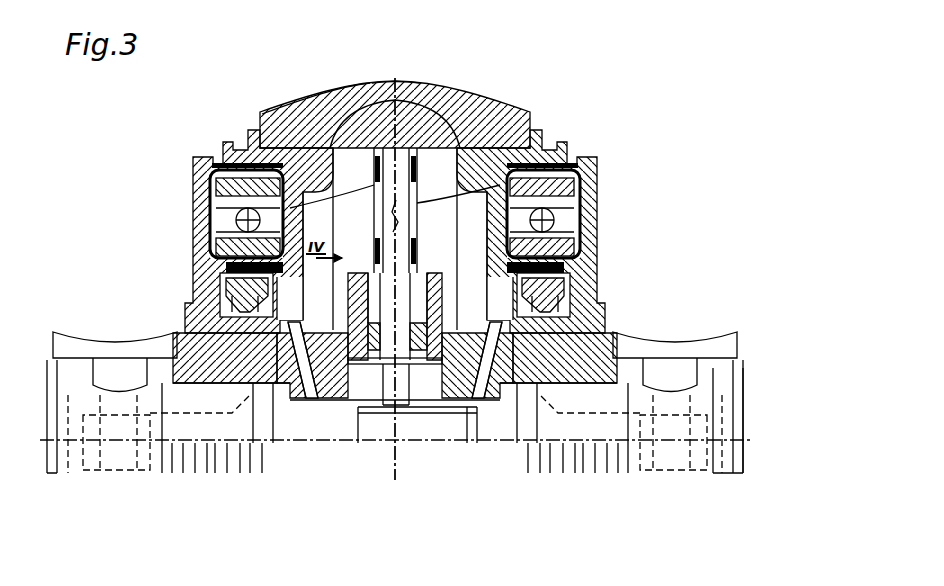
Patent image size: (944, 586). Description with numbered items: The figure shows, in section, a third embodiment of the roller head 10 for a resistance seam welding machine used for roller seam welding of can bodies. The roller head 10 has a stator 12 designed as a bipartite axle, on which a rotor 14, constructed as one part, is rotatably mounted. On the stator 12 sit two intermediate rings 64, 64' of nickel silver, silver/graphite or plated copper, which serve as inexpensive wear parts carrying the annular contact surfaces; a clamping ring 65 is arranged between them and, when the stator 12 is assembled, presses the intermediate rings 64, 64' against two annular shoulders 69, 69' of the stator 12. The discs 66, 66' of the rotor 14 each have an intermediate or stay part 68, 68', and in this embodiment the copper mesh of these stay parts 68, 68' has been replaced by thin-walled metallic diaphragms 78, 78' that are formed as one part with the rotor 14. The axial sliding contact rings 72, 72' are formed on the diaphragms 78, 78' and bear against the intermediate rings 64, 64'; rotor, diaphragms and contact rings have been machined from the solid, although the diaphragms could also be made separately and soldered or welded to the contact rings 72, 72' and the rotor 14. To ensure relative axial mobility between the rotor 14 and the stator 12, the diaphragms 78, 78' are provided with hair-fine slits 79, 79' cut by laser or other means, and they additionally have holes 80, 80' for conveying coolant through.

The roller head 10 is at (556, 104).
The stator 12 is at (615, 333).
The rotor 14 is at (378, 82).
The intermediate ring 64 is at (592, 301).
The intermediate ring 64' is at (197, 301).
The clamping ring 65 is at (410, 400).
The disc 66 is at (449, 239).
The disc 66' is at (352, 239).
The intermediate part 68 is at (458, 212).
The intermediate part 68' is at (332, 214).
The annular shoulder 69 is at (482, 340).
The annular shoulder 69' is at (308, 340).
The axial sliding contact ring 72 is at (498, 477).
The axial sliding contact ring 72' is at (417, 477).
The diaphragm 78 is at (401, 214).
The diaphragm 78' is at (388, 210).
The slit 79 is at (592, 210).
The slit 79' is at (210, 210).
The hole 80 is at (395, 94).
The hole 80' is at (316, 77).